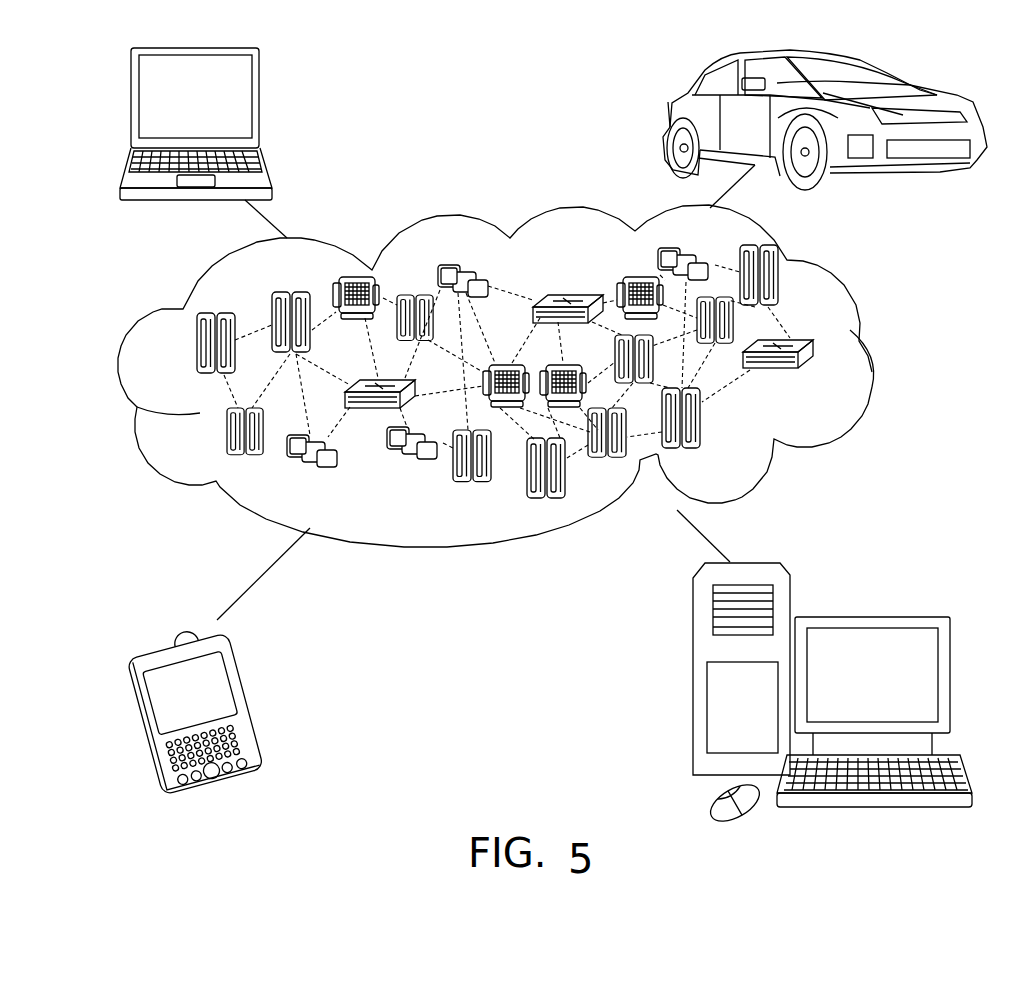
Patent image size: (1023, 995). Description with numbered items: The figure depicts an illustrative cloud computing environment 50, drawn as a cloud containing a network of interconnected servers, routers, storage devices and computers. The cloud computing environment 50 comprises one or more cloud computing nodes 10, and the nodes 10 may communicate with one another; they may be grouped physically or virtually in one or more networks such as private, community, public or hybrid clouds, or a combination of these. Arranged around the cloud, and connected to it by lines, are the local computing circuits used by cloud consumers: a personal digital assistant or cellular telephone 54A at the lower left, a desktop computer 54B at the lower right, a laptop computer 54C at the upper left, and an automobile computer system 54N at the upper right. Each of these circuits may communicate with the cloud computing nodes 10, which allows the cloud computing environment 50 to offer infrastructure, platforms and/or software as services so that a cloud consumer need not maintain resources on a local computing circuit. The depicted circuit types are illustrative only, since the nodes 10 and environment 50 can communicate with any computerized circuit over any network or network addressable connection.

The cloud computing node 10 is at (818, 382).
The cloud computing environment 50 is at (870, 353).
The personal digital assistant (PDA) or cellular telephone 54A is at (250, 700).
The desktop computer 54B is at (868, 613).
The laptop computer 54C is at (260, 105).
The automobile computer system 54N is at (667, 118).